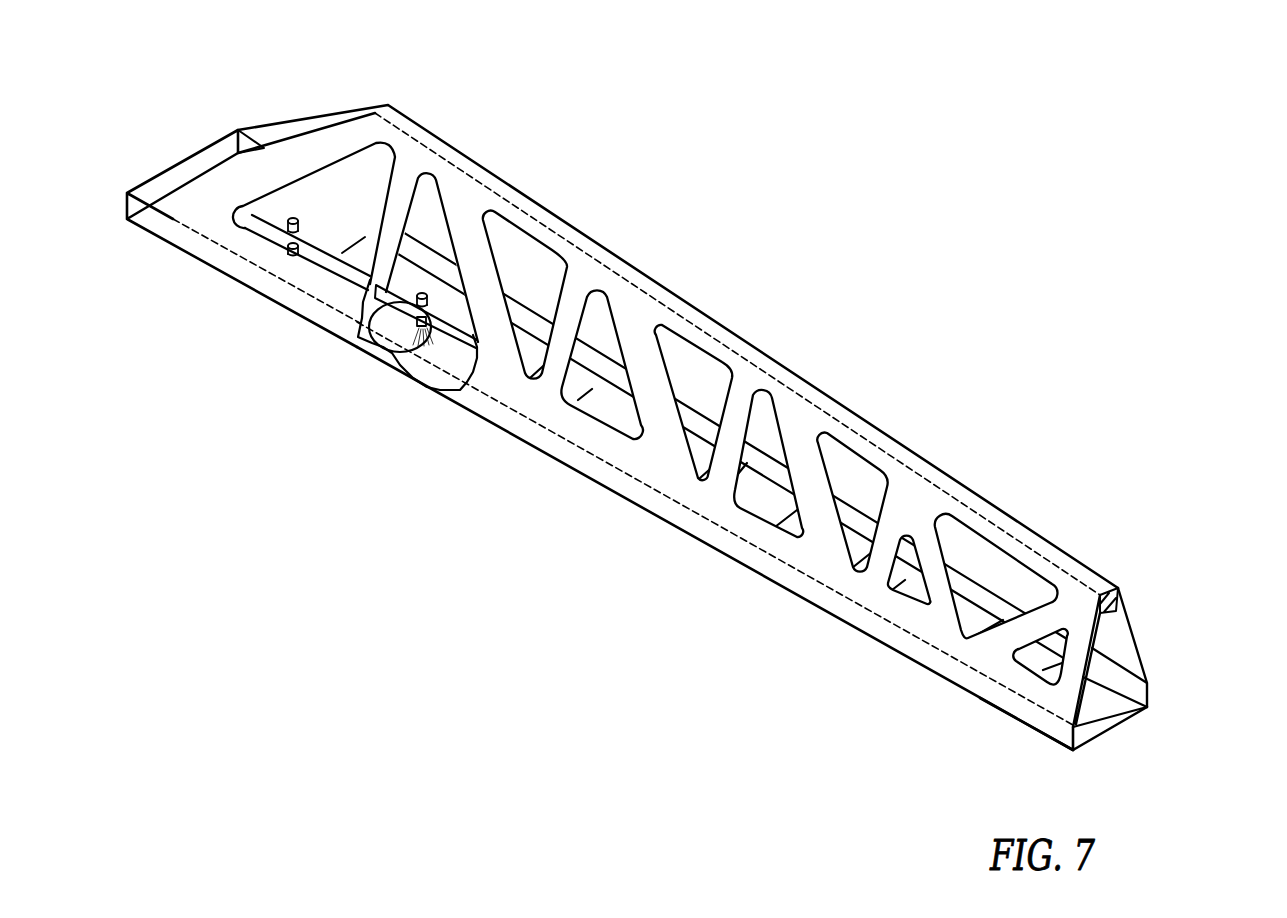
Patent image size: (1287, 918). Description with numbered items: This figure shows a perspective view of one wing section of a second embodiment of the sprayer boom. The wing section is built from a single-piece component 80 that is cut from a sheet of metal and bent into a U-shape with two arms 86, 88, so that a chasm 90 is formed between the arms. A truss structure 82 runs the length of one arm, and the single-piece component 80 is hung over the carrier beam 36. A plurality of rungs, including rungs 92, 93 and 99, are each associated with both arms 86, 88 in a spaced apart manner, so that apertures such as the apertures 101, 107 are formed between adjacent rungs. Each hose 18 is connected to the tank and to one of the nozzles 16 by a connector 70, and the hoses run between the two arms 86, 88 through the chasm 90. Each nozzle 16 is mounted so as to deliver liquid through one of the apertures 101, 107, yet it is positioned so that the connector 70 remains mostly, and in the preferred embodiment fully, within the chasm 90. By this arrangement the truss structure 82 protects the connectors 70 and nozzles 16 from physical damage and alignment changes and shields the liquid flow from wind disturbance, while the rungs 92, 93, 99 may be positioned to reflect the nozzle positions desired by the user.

The nozzle 16 is at (382, 358).
The hose 18 is at (429, 365).
The carrier beam 36 is at (1120, 588).
The connector 70 is at (386, 306).
The single-piece component 80 is at (917, 503).
The truss structure 82 is at (196, 192).
The arm 86 is at (1053, 700).
The arm 88 is at (1122, 630).
The chasm 90 is at (1107, 640).
The rung 92 is at (415, 272).
The rung 93 is at (457, 375).
The rung 99 is at (1115, 720).
The aperture 101 is at (458, 307).
The aperture 107 is at (1125, 697).